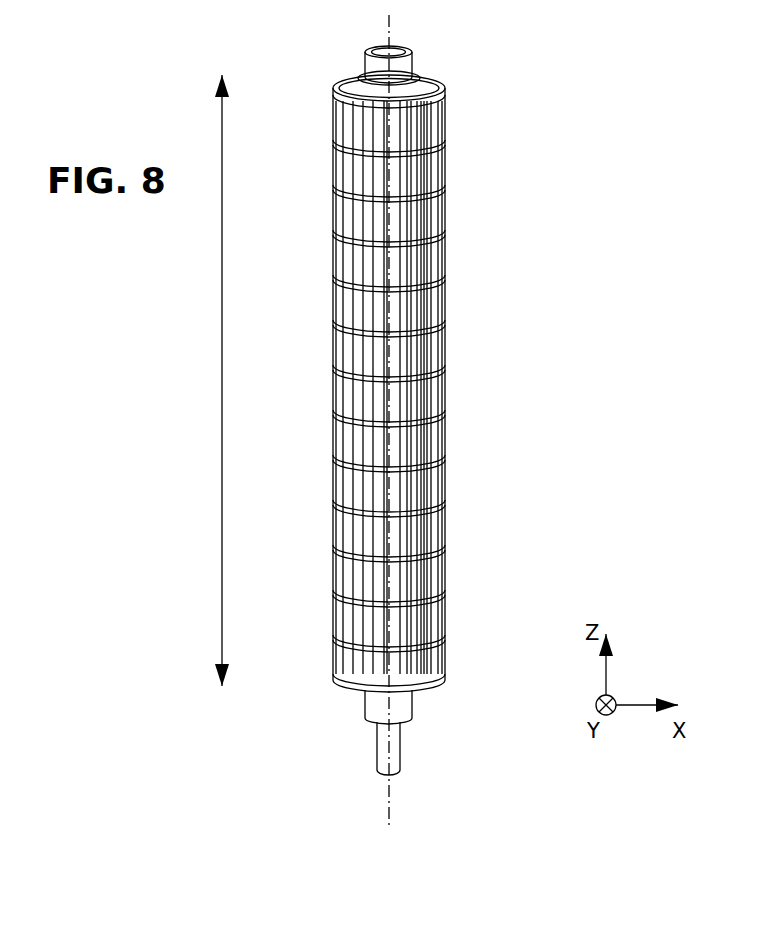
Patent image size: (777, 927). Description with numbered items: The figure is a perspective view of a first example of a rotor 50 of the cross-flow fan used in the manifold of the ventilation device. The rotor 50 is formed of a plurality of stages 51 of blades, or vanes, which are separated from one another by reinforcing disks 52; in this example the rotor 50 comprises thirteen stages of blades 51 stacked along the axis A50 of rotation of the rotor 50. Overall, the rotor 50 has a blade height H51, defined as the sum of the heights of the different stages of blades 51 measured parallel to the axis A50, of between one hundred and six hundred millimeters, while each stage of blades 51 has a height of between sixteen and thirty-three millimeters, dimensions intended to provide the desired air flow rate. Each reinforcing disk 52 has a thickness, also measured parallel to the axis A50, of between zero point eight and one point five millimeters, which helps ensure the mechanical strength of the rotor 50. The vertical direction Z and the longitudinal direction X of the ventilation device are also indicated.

The rotor 50 is at (490, 345).
The stages of blades 51 is at (454, 111).
The reinforcing disks 52 is at (343, 142).
The axis of rotation of the rotor A50 is at (392, 33).
The blade height H51 is at (193, 380).